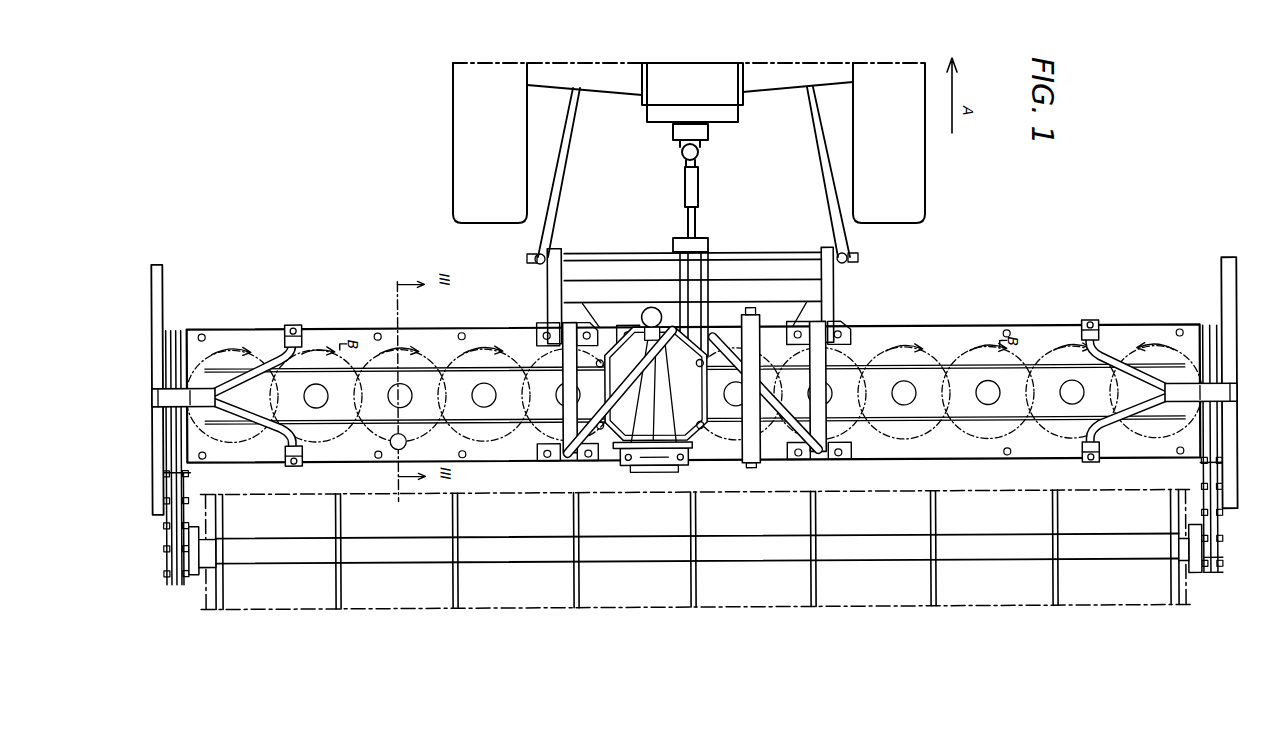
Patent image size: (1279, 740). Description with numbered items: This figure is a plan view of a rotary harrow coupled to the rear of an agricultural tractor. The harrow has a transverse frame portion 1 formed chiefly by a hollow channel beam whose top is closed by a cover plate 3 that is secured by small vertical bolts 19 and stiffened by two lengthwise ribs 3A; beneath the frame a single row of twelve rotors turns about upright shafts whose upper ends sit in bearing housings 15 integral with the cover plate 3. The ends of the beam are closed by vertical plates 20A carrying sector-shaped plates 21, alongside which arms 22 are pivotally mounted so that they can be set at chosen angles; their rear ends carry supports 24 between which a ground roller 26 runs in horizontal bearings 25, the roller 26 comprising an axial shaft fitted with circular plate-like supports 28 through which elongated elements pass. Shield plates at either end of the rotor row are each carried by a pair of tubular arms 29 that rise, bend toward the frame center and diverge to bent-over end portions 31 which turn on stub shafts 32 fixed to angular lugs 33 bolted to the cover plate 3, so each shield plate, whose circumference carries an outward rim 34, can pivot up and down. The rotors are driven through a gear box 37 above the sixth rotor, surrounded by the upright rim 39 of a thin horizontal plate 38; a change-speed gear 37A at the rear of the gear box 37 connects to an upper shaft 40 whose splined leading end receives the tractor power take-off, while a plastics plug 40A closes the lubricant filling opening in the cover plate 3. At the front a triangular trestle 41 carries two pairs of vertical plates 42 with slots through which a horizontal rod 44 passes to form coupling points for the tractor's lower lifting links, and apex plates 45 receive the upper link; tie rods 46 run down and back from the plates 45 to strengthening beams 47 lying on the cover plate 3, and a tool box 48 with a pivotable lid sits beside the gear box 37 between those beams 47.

The frame portion 1 is at (367, 325).
The cover plate 3 is at (992, 479).
The stiffening ribs 3A is at (392, 400).
The housing 15 is at (505, 400).
The bolts 19 is at (292, 332).
The vertical plates 20A is at (205, 470).
The sector-shaped plates 21 is at (170, 480).
The arms 22 is at (1223, 540).
The supports 24 is at (165, 572).
The horizontal bearings 25 is at (192, 580).
The ground roller 26 is at (758, 616).
The plate-like supports 28 is at (461, 583).
The arms 29 is at (155, 393).
The end portions 31 is at (286, 395).
The stub shafts 32 is at (292, 325).
The angular lugs 33 is at (291, 468).
The rim 34 is at (163, 290).
The gear box 37 is at (672, 465).
The change-speed gear 37A is at (645, 472).
The horizontal plate 38 is at (708, 408).
The upright rim 39 is at (710, 452).
The upper horizontal shaft 40 is at (648, 308).
The cap or plug 40A is at (398, 476).
The coupling member or trestle 41 is at (835, 262).
The vertical plates 42 is at (548, 300).
The horizontal rod 44 is at (640, 262).
The vertical plates 45 is at (712, 262).
The tie rods 46 is at (748, 356).
The strengthening beams 47 is at (562, 445).
The box 48 is at (765, 450).